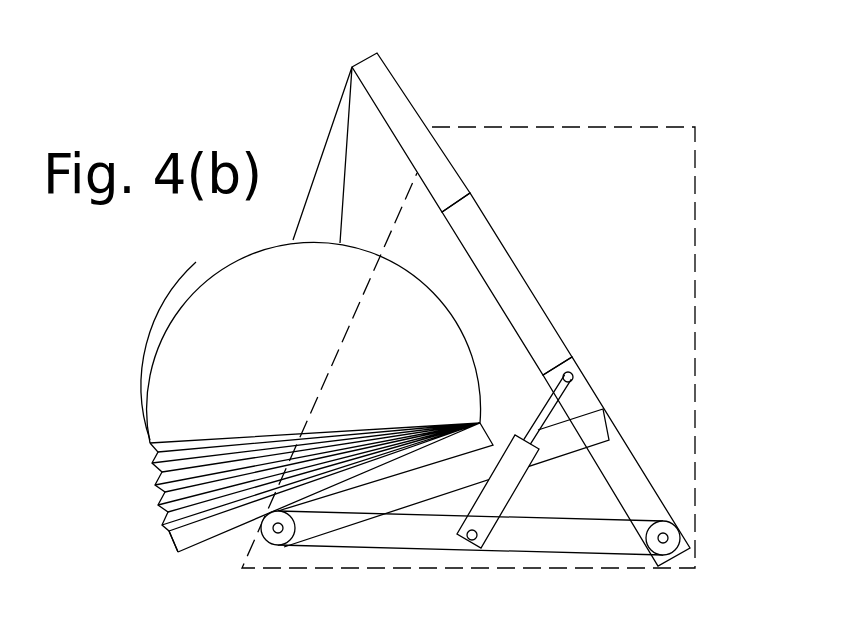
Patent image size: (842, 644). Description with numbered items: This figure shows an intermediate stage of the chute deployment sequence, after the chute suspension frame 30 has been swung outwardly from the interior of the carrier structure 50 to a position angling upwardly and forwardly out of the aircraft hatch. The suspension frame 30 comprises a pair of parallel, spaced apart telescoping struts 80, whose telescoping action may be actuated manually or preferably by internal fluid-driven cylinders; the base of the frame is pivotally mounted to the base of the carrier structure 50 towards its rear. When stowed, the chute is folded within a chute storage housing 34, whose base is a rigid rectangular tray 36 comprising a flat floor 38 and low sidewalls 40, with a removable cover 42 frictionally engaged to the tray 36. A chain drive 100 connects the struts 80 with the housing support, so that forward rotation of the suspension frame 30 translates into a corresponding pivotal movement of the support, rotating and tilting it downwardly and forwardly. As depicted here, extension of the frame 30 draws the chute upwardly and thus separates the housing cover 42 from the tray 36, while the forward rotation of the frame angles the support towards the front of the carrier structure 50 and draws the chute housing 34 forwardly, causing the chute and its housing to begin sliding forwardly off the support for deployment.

The chute suspension frame 30 is at (407, 112).
The chute storage housing 34 is at (393, 372).
The rigid rectangular tray 36 is at (205, 527).
The flat floor 38 is at (186, 553).
The low sidewalls 40 is at (355, 482).
The removable cover 42 is at (197, 319).
The carrier structure 50 is at (720, 256).
The telescoping struts 80 is at (510, 255).
The chain drive 100 is at (588, 522).